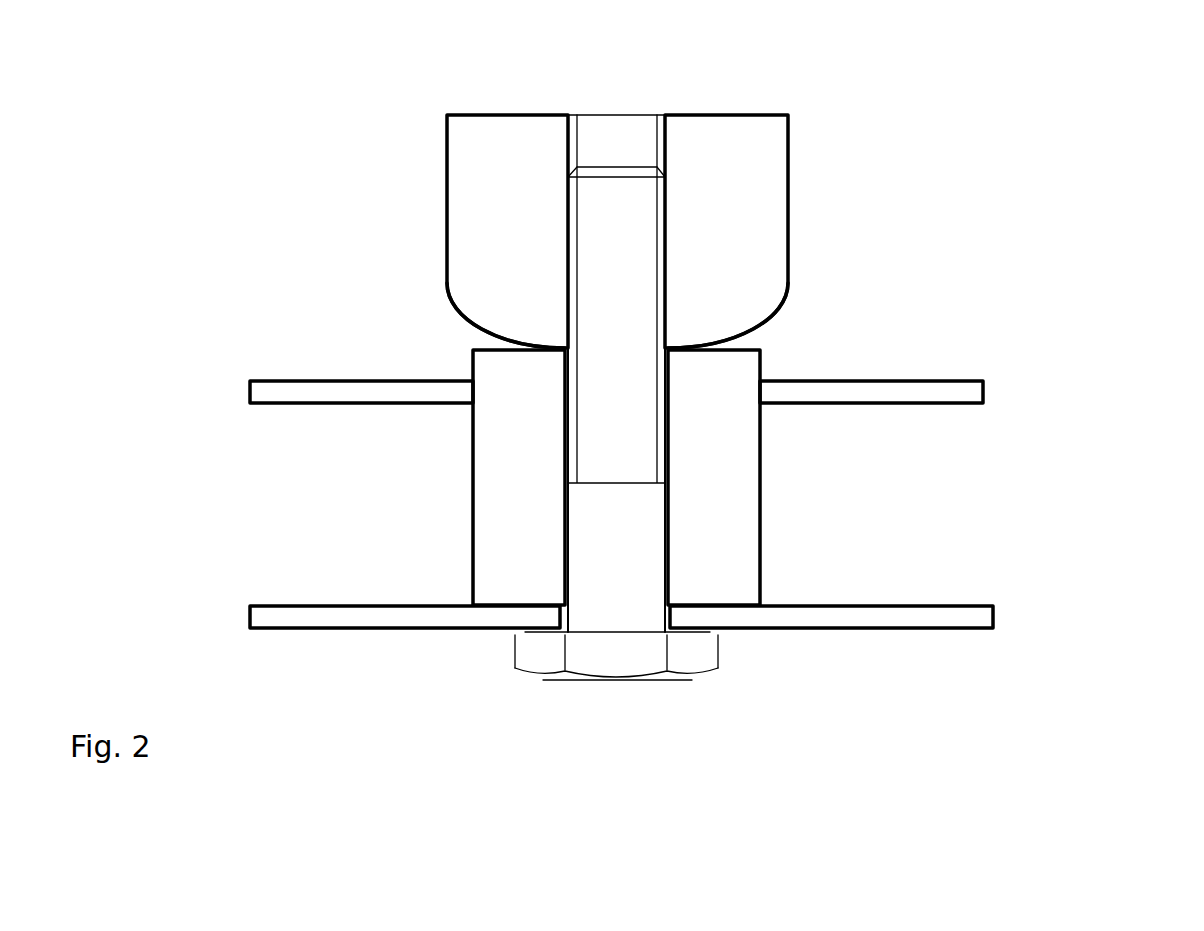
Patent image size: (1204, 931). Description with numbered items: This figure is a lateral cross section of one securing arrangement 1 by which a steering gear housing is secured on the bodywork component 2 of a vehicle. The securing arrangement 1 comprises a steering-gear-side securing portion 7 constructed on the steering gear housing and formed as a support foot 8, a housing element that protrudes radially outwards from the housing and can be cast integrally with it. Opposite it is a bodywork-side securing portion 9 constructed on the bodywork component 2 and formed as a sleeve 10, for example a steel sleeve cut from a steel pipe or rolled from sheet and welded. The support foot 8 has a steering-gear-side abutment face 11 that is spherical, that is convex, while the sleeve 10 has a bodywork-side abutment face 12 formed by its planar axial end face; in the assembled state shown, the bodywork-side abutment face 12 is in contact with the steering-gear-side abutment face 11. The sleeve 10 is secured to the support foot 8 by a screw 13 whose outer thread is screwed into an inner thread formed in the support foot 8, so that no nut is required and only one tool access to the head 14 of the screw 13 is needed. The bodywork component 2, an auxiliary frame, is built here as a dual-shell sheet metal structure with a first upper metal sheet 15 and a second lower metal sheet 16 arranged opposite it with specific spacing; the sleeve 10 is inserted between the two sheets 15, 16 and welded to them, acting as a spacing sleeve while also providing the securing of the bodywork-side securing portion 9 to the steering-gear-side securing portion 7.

The securing arrangement 1 is at (262, 175).
The bodywork component 2 is at (691, 472).
The steering-gear-side securing portion 7 is at (847, 164).
The support foot 8 is at (738, 128).
The bodywork-side securing portion 9 is at (798, 504).
The sleeve 10 is at (500, 462).
The steering-gear-side abutment face 11 is at (473, 320).
The bodywork-side abutment face 12 is at (753, 343).
The screw 13 is at (613, 577).
The head 14 is at (693, 658).
The first upper metal sheet 15 is at (965, 392).
The second lower metal sheet 16 is at (965, 615).